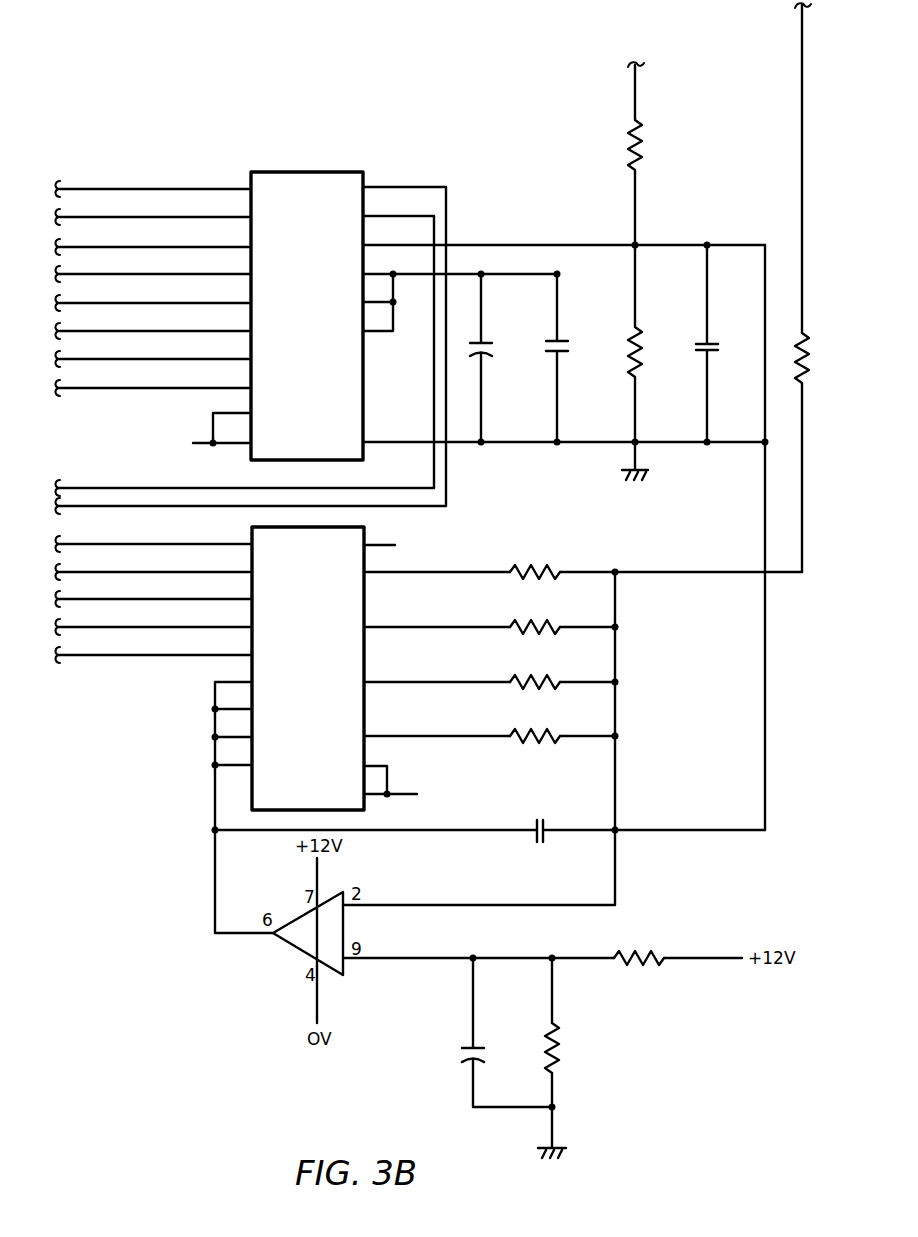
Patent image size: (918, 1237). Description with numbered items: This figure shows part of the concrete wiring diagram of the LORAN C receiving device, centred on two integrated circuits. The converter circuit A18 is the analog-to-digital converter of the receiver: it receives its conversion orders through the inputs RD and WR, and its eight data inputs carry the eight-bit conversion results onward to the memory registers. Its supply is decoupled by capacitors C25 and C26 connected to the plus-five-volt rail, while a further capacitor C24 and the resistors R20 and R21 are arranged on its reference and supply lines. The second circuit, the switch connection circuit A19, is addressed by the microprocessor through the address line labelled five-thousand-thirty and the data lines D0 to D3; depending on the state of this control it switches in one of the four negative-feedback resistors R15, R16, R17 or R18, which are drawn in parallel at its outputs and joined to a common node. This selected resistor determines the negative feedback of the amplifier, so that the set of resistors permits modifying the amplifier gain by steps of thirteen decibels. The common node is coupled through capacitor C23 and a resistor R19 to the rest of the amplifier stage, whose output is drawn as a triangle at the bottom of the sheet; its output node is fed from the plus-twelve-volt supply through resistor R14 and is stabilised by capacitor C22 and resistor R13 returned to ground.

The converter circuit A18 is at (410, 340).
The switch connection circuit A19 is at (283, 728).
The resistor R13 is at (568, 1057).
The resistor R14 is at (678, 971).
The negative feedback-resistor R15 is at (656, 560).
The negative feedback-resistor R16 is at (564, 615).
The negative feedback-resistor R17 is at (564, 669).
The negative feedback-resistor R18 is at (564, 723).
The resistor R19 is at (789, 348).
The resistor R20 is at (653, 155).
The resistor R21 is at (651, 362).
The capacitor C22 is at (507, 1031).
The capacitor C23 is at (490, 819).
The capacitor C24 is at (721, 344).
The capacitor C25 is at (495, 358).
The capacitor C26 is at (571, 358).